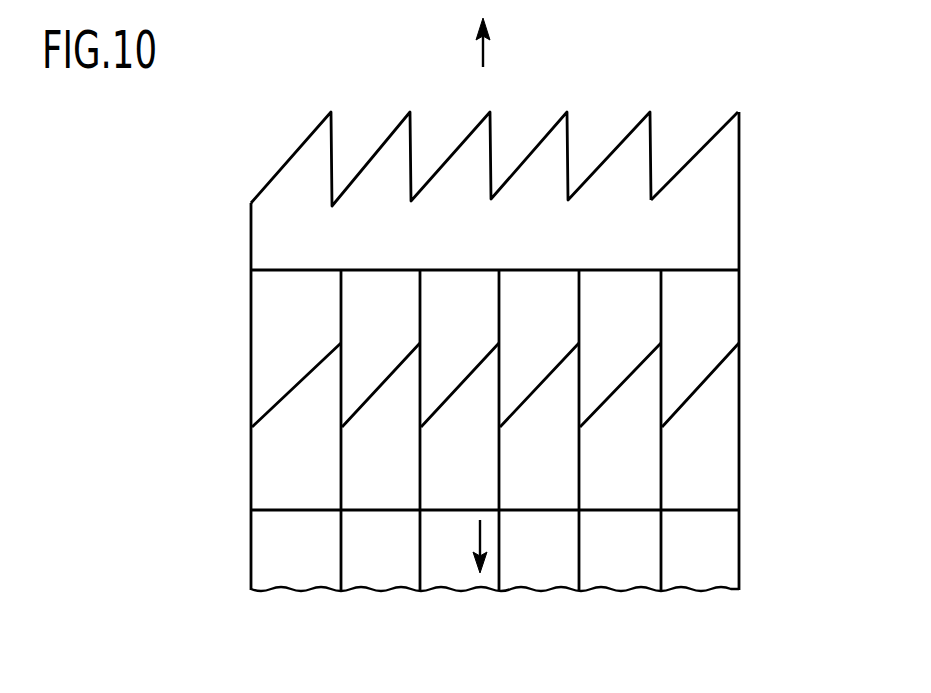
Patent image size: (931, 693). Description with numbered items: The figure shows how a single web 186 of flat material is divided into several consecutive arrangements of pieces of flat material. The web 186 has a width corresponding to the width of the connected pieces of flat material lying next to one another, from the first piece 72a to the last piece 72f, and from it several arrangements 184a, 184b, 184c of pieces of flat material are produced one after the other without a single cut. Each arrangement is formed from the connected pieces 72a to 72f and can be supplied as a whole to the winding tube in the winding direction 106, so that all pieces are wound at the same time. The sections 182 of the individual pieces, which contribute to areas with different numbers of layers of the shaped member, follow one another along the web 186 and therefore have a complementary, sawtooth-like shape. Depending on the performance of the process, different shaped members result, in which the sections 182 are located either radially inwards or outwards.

The winding direction 106 is at (483, 52).
The sections of the individual pieces of flat material 182 is at (312, 147).
The piece of flat material 72a is at (260, 233).
The arrangement of pieces of flat material 184a is at (719, 151).
The piece of flat material 72f is at (718, 237).
The arrangement of pieces of flat material 184b is at (702, 333).
The arrangement of pieces of flat material 184c is at (703, 403).
The web of material 186 is at (512, 595).